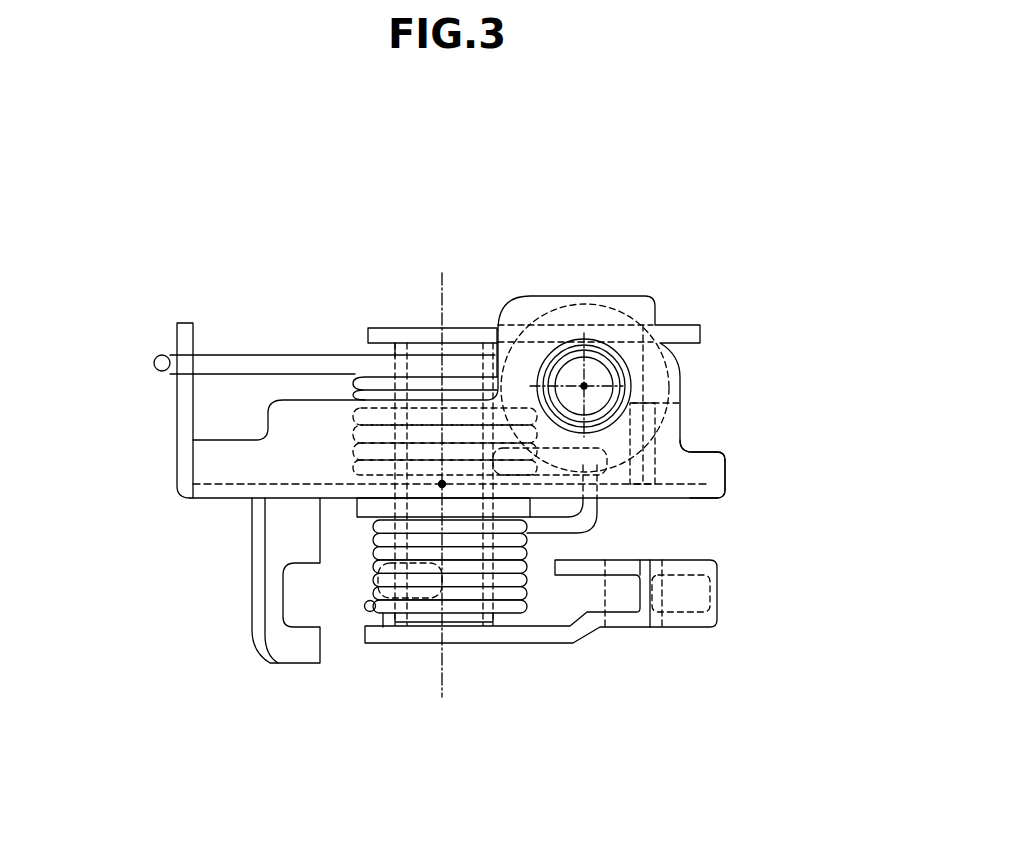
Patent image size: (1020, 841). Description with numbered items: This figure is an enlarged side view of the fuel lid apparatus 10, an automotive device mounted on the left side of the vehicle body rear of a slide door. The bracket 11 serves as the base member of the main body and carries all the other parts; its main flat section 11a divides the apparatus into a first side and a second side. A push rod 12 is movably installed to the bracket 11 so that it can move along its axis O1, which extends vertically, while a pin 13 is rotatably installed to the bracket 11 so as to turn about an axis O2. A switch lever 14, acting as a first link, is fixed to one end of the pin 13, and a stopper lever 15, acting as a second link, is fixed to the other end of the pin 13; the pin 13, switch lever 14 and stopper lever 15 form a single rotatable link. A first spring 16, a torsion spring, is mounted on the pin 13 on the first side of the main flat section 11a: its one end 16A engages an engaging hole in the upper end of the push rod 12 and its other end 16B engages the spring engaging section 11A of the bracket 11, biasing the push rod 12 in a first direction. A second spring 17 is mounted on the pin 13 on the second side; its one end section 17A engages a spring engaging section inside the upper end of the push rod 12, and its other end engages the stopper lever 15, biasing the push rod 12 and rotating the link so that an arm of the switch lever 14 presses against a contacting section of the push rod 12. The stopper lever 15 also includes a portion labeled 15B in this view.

The fuel lid apparatus 10 is at (228, 678).
The bracket 11 is at (182, 500).
The spring engaging section 11A is at (185, 323).
The main flat section 11a is at (250, 484).
The push rod 12 is at (600, 393).
The pin 13 is at (452, 623).
The switch lever 14 is at (372, 323).
The stopper lever 15 is at (535, 648).
The hook portion of lower plate 15B is at (632, 630).
The first spring 16 is at (420, 383).
The one end of first spring 16A is at (663, 395).
The other end of first spring 16B is at (156, 359).
The second spring 17 is at (428, 603).
The one end section of second spring 17A is at (712, 450).
The axis of push rod O1 is at (586, 384).
The axis of pin O2 is at (445, 306).